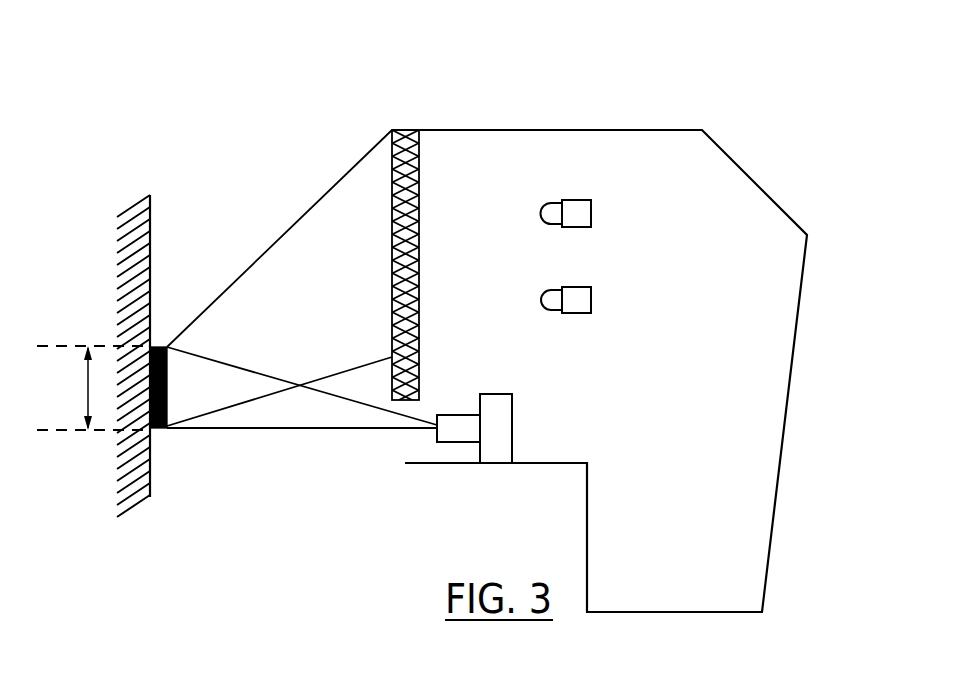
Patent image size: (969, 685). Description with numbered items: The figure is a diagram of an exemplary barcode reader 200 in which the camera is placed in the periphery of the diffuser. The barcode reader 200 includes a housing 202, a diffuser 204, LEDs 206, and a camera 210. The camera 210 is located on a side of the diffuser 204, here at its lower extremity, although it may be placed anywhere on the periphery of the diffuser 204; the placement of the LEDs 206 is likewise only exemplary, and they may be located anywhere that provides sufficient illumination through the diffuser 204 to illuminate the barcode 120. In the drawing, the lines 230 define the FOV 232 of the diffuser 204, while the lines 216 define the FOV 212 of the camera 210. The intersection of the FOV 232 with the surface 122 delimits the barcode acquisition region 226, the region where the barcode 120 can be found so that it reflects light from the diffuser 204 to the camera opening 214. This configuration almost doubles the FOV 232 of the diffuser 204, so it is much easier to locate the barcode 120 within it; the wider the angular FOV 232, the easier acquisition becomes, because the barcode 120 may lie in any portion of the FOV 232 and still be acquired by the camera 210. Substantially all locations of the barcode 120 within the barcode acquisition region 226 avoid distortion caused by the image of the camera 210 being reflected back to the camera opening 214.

The barcode reader 200 is at (774, 86).
The housing 202 is at (540, 128).
The diffuser 204 is at (392, 232).
The LEDs 206 is at (578, 200).
The camera 210 is at (513, 400).
The FOV of the camera 212 is at (193, 367).
The camera opening 214 is at (434, 438).
The lines 216 is at (330, 395).
The barcode acquisition region 226 is at (85, 370).
The lines 230 is at (368, 152).
The FOV of the diffuser 232 is at (318, 223).
The barcode 120 is at (168, 405).
The surface 122 is at (150, 235).